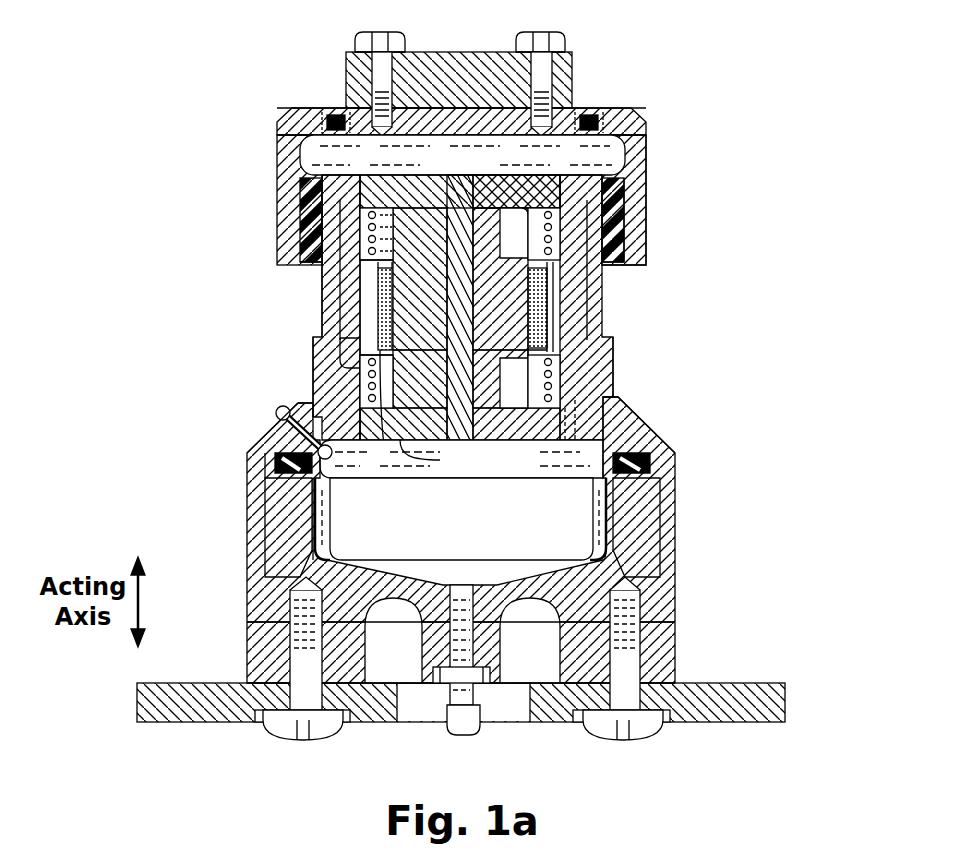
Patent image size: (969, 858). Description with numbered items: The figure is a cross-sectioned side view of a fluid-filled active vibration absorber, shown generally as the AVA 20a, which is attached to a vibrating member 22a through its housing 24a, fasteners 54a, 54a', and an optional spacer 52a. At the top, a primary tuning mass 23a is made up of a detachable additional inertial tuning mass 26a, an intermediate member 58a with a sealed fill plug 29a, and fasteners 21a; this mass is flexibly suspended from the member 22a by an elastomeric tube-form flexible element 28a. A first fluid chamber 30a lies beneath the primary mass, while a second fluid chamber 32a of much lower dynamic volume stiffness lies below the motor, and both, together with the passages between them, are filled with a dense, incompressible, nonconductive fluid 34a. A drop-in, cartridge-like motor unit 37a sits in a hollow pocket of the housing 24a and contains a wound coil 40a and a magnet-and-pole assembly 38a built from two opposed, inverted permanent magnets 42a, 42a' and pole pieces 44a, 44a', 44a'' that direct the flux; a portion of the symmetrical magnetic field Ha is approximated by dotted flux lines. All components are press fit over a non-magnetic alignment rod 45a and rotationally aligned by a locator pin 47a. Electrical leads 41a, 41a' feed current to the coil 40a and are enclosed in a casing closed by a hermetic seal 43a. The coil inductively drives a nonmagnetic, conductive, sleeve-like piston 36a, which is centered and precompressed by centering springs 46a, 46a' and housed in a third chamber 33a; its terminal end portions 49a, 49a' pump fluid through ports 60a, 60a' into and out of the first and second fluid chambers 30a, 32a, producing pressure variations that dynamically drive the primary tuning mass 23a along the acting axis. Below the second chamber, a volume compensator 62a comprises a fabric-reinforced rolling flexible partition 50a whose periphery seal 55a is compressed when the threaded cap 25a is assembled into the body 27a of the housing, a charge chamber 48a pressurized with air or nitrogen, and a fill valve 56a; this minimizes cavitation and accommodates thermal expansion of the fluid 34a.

The fluid-filled AVA 20a is at (648, 412).
The fasteners 21a is at (555, 44).
The member 22a is at (735, 683).
The primary tuning mass 23a is at (340, 103).
The housing 24a is at (685, 583).
The threaded cap 25a is at (262, 520).
The additional inertial tuning mass 26a is at (484, 96).
The body 27a is at (665, 515).
The flexible element 28a is at (285, 188).
The sealed fill plug 29a is at (590, 110).
The first fluid chamber 30a is at (484, 170).
The second fluid chamber 32a is at (534, 476).
The third chamber 33a is at (612, 360).
The fluid 34a is at (655, 440).
The piston 36a is at (570, 316).
The motor unit 37a is at (595, 285).
The magnet-and-pole assembly 38a is at (345, 312).
The coil 40a is at (358, 290).
The electrical lead 41a is at (243, 424).
The electrical lead 41a' is at (230, 428).
The permanent magnet 42a is at (460, 262).
The permanent magnet 42a' is at (460, 395).
The hermetic seal 43a is at (268, 455).
The pole piece 44a is at (301, 361).
The pole piece 44a' is at (258, 220).
The pole piece 44a'' is at (462, 307).
The alignment rod 45a is at (412, 459).
The centering spring 46a is at (380, 243).
The centering spring 46a' is at (393, 381).
The locator pin 47a is at (332, 346).
The charge chamber 48a is at (440, 537).
The terminal end portion 49a is at (505, 220).
The terminal end portion 49a' is at (610, 352).
The flexible partition 50a is at (375, 485).
The spacer 52a is at (670, 650).
The fastener 54a is at (261, 677).
The fastener 54a' is at (670, 680).
The periphery seal 55a is at (652, 470).
The fill valve 56a is at (457, 727).
The intermediate member 58a is at (648, 160).
The fluid port 60a is at (402, 137).
The fluid port 60a' is at (630, 406).
The volume compensator 62a is at (307, 535).
The magnetic field Ha is at (615, 220).